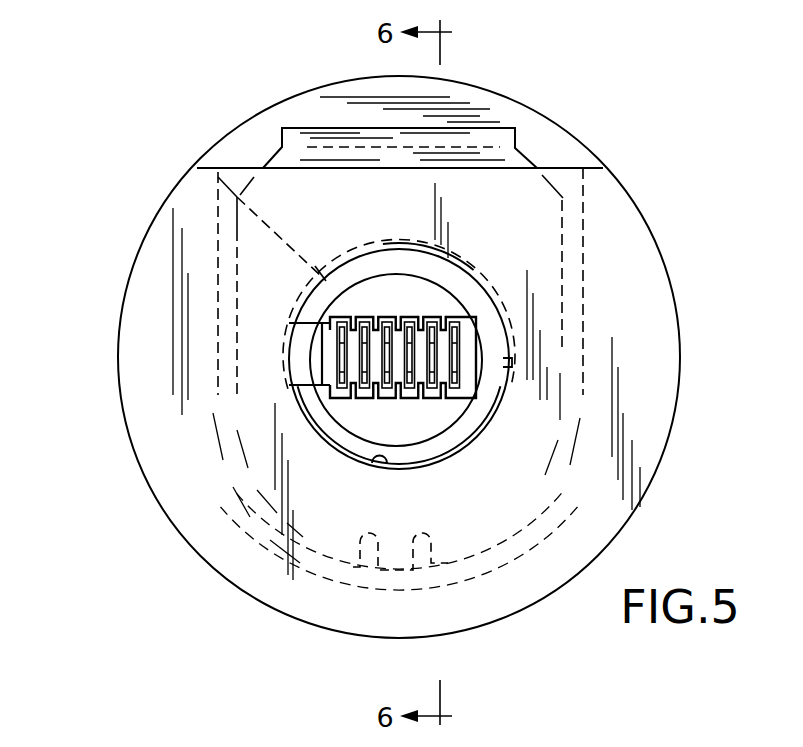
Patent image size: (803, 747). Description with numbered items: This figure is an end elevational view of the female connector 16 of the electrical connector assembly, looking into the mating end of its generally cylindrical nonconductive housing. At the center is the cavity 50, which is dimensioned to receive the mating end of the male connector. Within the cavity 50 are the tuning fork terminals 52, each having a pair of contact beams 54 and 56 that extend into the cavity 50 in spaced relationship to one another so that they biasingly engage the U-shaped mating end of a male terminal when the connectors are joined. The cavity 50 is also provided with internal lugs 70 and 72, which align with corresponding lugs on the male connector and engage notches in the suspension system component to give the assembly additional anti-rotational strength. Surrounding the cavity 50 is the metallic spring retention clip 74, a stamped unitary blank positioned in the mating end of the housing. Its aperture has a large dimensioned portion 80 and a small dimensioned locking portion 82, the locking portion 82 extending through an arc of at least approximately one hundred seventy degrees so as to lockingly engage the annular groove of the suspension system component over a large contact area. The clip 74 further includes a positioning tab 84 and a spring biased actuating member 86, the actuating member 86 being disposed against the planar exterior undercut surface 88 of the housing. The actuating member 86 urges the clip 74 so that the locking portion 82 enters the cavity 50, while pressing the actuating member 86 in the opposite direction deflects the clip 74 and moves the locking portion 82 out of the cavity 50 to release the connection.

The female connector 16 is at (90, 300).
The cavity 50 is at (380, 423).
The tuning fork terminals 52 is at (437, 313).
The contact beam 54 is at (477, 335).
The contact beam 56 is at (465, 382).
The internal lug 70 is at (312, 352).
The internal lug 72 is at (481, 362).
The spring retention clip 74 is at (474, 123).
The large dimensioned portion 80 is at (210, 162).
The small dimensioned locking portion 82 is at (364, 460).
The positioning tab 84 is at (362, 570).
The spring biased actuating member 86 is at (400, 110).
The planar exterior undercut surface 88 is at (563, 168).